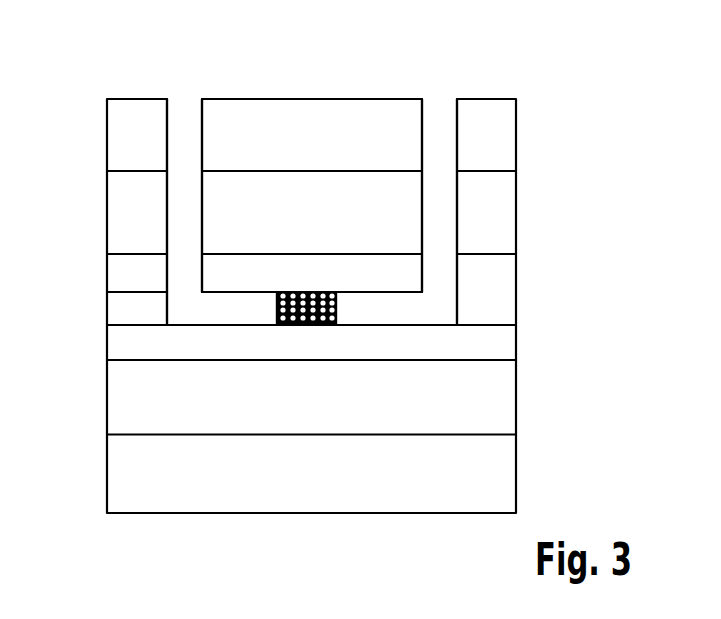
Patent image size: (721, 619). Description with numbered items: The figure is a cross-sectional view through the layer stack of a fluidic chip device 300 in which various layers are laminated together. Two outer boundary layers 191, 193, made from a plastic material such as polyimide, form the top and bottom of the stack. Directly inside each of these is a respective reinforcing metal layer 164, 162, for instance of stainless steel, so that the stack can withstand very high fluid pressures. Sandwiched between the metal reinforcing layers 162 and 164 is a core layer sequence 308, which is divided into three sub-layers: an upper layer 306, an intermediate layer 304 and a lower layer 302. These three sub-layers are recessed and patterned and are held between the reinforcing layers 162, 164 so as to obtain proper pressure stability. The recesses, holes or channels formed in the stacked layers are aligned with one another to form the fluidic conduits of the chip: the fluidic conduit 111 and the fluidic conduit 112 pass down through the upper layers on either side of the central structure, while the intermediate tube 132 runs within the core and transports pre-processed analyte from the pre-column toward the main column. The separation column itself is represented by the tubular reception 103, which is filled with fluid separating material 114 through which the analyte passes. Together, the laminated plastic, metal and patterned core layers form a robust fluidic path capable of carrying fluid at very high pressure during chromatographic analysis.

The fluidic chip device 300 is at (568, 90).
The fluidic conduit 111 is at (183, 113).
The fluidic conduit 112 is at (440, 113).
The outer boundary layer 191 is at (500, 133).
The reinforcing metal layer 164 is at (500, 207).
The core layer sequence 308 is at (530, 253).
The intermediate layer 304 is at (120, 311).
The lower layer 302 is at (367, 340).
The reinforcing metal layer 162 is at (500, 398).
The outer boundary layer 193 is at (500, 470).
The intermediate tube 132 is at (235, 303).
The tubular reception 103 is at (274, 306).
The upper layer 306 is at (365, 273).
The fluid separating material 114 is at (323, 327).